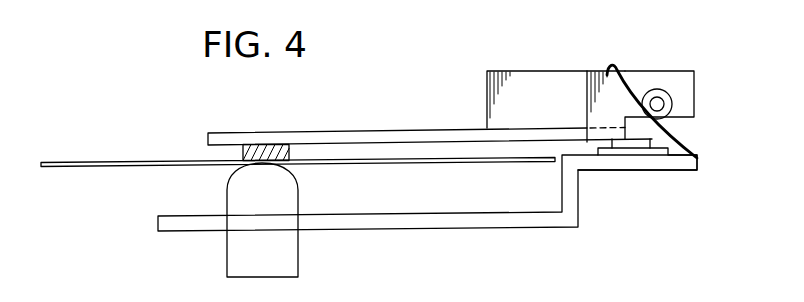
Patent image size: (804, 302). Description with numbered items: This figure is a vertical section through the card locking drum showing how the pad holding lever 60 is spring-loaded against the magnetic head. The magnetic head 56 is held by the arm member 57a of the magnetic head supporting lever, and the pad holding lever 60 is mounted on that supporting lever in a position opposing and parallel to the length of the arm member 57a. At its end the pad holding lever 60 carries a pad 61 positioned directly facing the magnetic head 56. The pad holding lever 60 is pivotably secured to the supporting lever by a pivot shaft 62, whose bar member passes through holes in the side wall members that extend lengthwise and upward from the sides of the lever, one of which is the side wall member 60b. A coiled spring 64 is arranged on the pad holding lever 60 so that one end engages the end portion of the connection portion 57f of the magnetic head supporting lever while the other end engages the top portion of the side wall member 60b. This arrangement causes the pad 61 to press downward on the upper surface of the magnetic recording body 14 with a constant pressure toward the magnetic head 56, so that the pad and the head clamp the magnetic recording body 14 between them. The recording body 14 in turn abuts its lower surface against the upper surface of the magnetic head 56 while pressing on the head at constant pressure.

The magnetic recording body 14 is at (92, 168).
The magnetic head 56 is at (230, 253).
The arm member 57a is at (383, 226).
The connection portion 57f is at (643, 170).
The pad holding lever 60 is at (380, 131).
The side wall member 60b is at (599, 82).
The pad 61 is at (243, 151).
The pivot shaft 62 is at (658, 102).
The coiled spring 64 is at (626, 84).